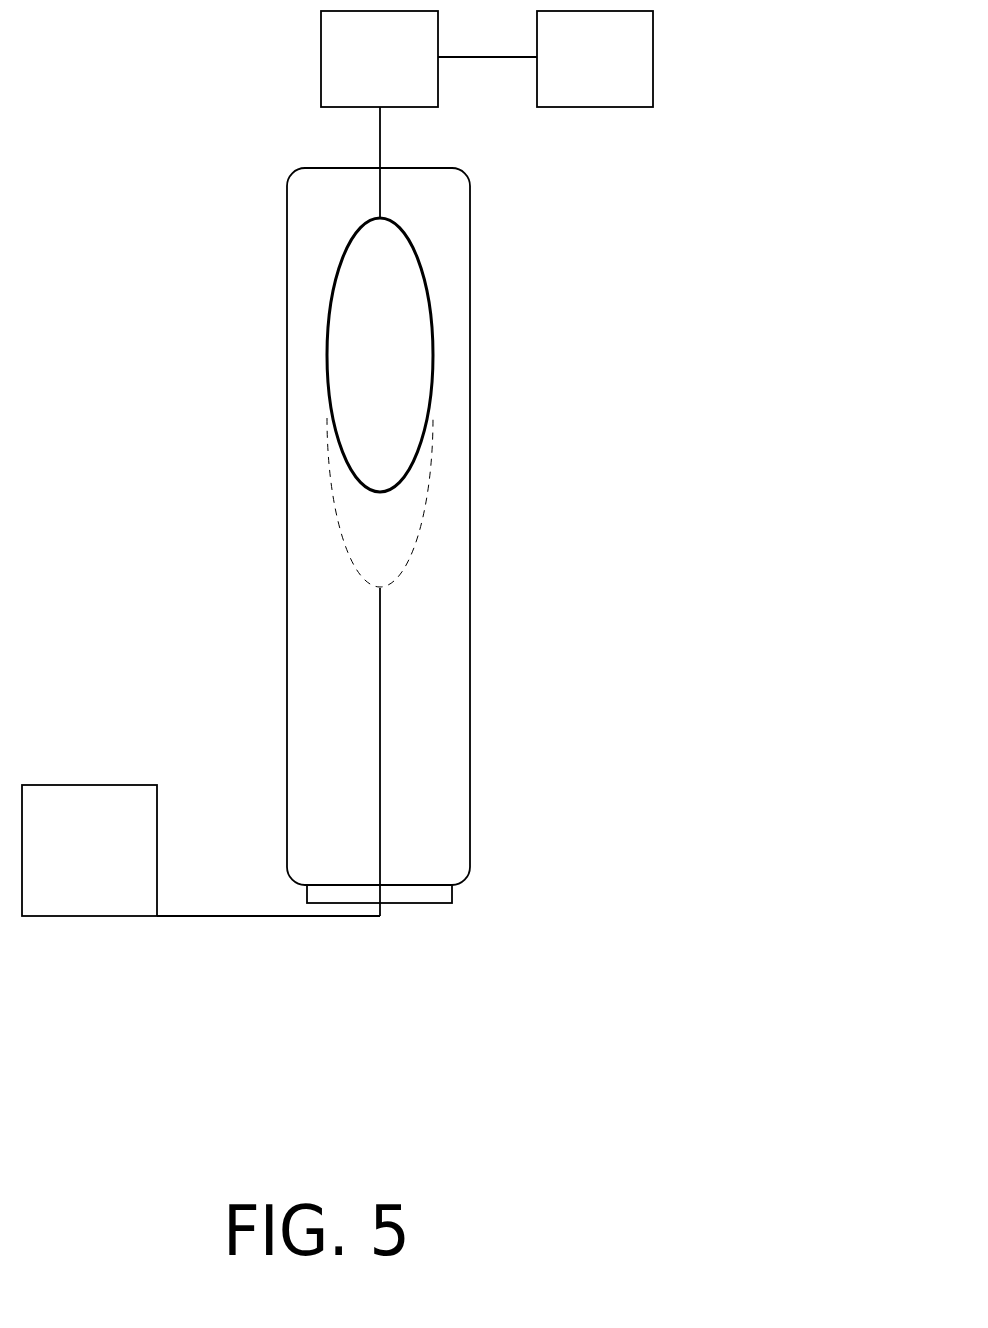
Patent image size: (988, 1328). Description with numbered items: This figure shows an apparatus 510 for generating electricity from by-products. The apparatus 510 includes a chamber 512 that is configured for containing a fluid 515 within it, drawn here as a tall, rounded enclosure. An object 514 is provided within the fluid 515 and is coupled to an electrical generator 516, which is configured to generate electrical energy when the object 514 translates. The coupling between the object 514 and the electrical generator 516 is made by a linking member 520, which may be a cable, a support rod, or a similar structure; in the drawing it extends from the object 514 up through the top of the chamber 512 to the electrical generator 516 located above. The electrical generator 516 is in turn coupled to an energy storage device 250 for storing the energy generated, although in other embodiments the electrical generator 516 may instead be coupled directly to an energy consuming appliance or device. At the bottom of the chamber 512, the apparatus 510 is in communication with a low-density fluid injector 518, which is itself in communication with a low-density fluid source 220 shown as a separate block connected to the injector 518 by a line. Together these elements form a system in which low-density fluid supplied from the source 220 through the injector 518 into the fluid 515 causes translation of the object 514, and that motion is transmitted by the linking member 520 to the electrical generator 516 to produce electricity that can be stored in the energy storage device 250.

The apparatus 510 is at (469, 531).
The chamber 512 is at (470, 580).
The object 514 is at (407, 415).
The fluid 515 is at (425, 703).
The electrical generator 516 is at (424, 78).
The low-density fluid injector 518 is at (433, 895).
The linking member 520 is at (380, 193).
The energy storage device 250 is at (634, 78).
The low-density fluid source 220 is at (126, 870).